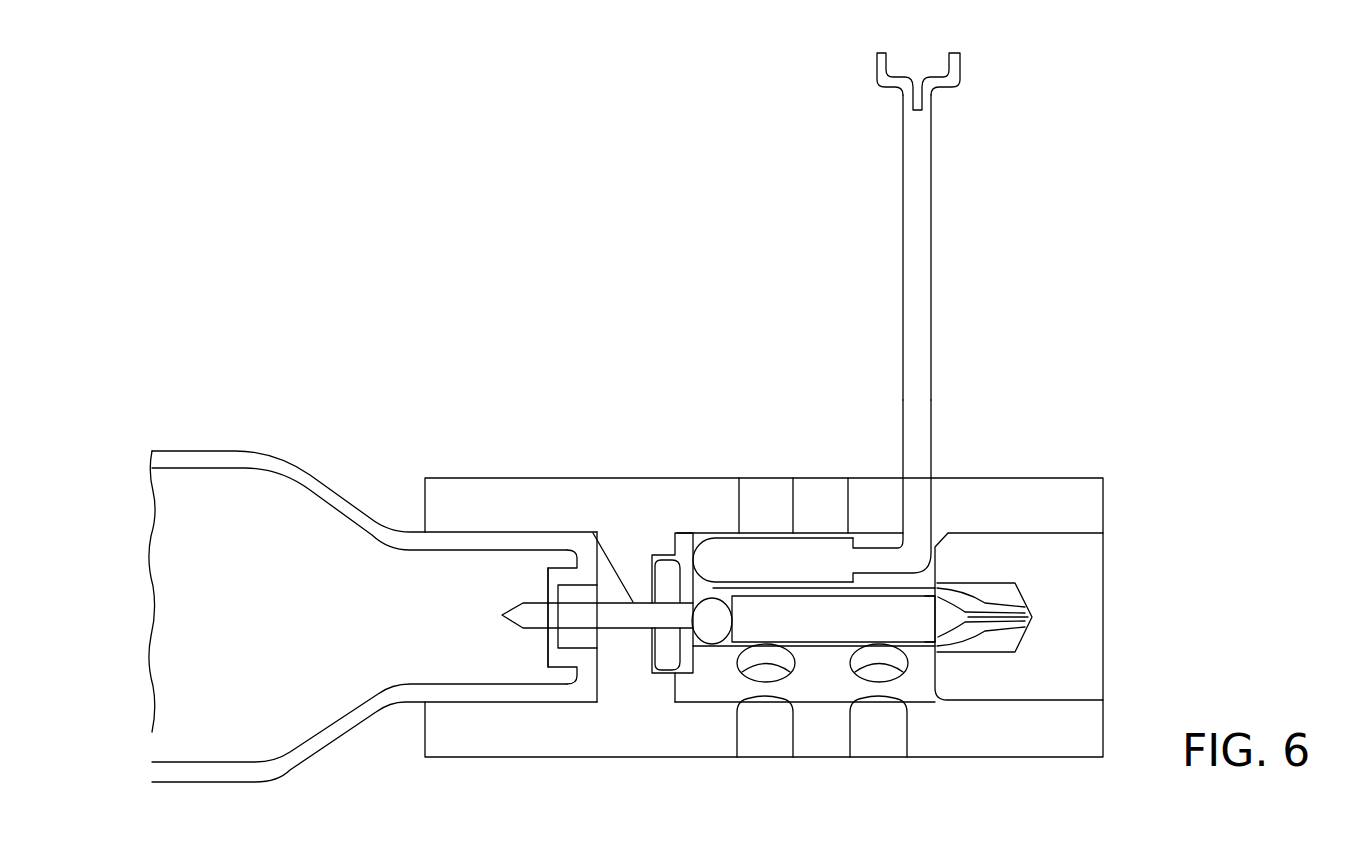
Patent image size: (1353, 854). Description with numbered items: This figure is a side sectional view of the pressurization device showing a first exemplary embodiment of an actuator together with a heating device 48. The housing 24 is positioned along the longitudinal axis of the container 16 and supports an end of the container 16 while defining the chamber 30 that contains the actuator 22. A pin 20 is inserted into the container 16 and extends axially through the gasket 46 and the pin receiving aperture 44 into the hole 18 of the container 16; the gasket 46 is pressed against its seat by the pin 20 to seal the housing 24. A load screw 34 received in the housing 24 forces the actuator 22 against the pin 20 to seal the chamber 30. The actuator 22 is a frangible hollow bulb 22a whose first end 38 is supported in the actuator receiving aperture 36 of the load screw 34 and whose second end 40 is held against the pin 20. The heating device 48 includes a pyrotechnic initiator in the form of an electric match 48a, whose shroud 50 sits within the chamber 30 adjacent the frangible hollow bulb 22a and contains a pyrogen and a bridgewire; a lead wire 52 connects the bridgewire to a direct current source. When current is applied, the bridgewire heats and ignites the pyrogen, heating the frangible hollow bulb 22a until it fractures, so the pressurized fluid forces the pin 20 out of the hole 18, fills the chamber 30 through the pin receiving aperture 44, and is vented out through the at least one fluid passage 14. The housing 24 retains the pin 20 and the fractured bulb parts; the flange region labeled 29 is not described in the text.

The fluid passage 14 is at (758, 742).
The container 16 is at (272, 718).
The hole 18 is at (553, 625).
The pin 20 is at (597, 618).
The actuator 22 is at (820, 655).
The frangible hollow bulb 22a is at (925, 645).
The housing 24 is at (1073, 732).
The flange 29 is at (600, 578).
The chamber 30 is at (768, 688).
The load screw 34 is at (1067, 570).
The actuator receiving aperture 36 is at (998, 595).
The first end 38 is at (1033, 618).
The second end 40 is at (703, 553).
The pin receiving aperture 44 is at (640, 630).
The gasket 46 is at (662, 655).
The heating device 48 is at (980, 305).
The electric match 48a is at (933, 228).
The shroud 50 is at (735, 535).
The lead wire 52 is at (933, 152).